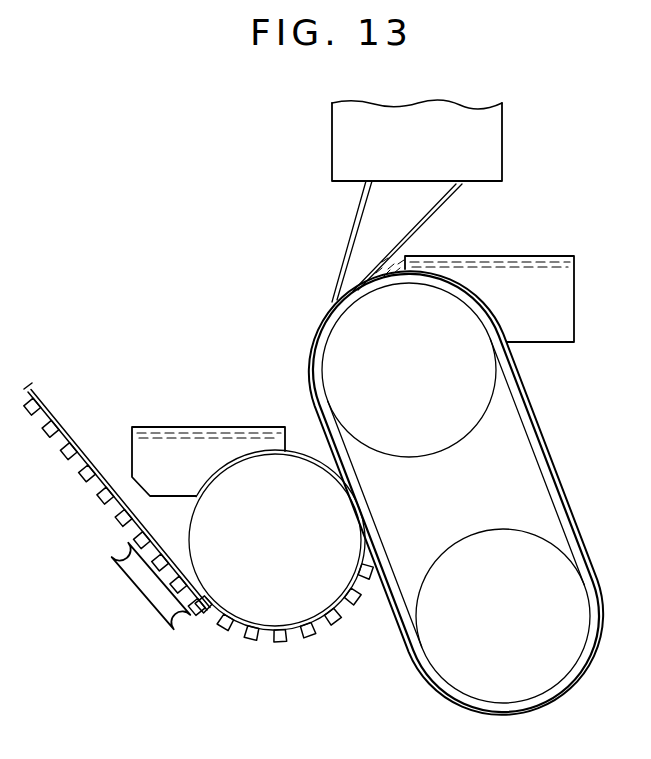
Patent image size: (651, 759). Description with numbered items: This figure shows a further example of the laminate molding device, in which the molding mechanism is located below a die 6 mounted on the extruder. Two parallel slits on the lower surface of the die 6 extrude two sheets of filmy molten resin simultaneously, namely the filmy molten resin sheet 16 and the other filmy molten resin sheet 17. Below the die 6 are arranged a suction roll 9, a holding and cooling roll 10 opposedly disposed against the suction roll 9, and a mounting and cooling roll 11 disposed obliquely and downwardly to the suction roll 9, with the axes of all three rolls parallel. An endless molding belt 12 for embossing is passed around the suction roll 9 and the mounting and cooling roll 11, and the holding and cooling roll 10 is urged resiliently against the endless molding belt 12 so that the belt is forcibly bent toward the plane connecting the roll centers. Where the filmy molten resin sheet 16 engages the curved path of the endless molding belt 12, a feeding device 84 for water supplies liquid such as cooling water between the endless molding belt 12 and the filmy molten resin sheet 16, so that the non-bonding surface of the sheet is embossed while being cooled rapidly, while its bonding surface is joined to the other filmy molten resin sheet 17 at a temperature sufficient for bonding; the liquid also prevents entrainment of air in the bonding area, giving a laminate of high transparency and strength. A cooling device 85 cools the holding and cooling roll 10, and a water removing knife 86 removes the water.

The die 6 is at (490, 151).
The filmy molten resin sheet 16 is at (434, 213).
The filmy molten resin sheet 17 is at (352, 243).
The feeding device for water 84 is at (566, 310).
The cooling device 85 is at (164, 427).
The water removing knife 86 is at (152, 590).
The suction roll 9 is at (447, 432).
The holding and cooling roll 10 is at (266, 610).
The mounting and cooling roll 11 is at (478, 692).
The endless molding belt for embossing 12 is at (556, 483).